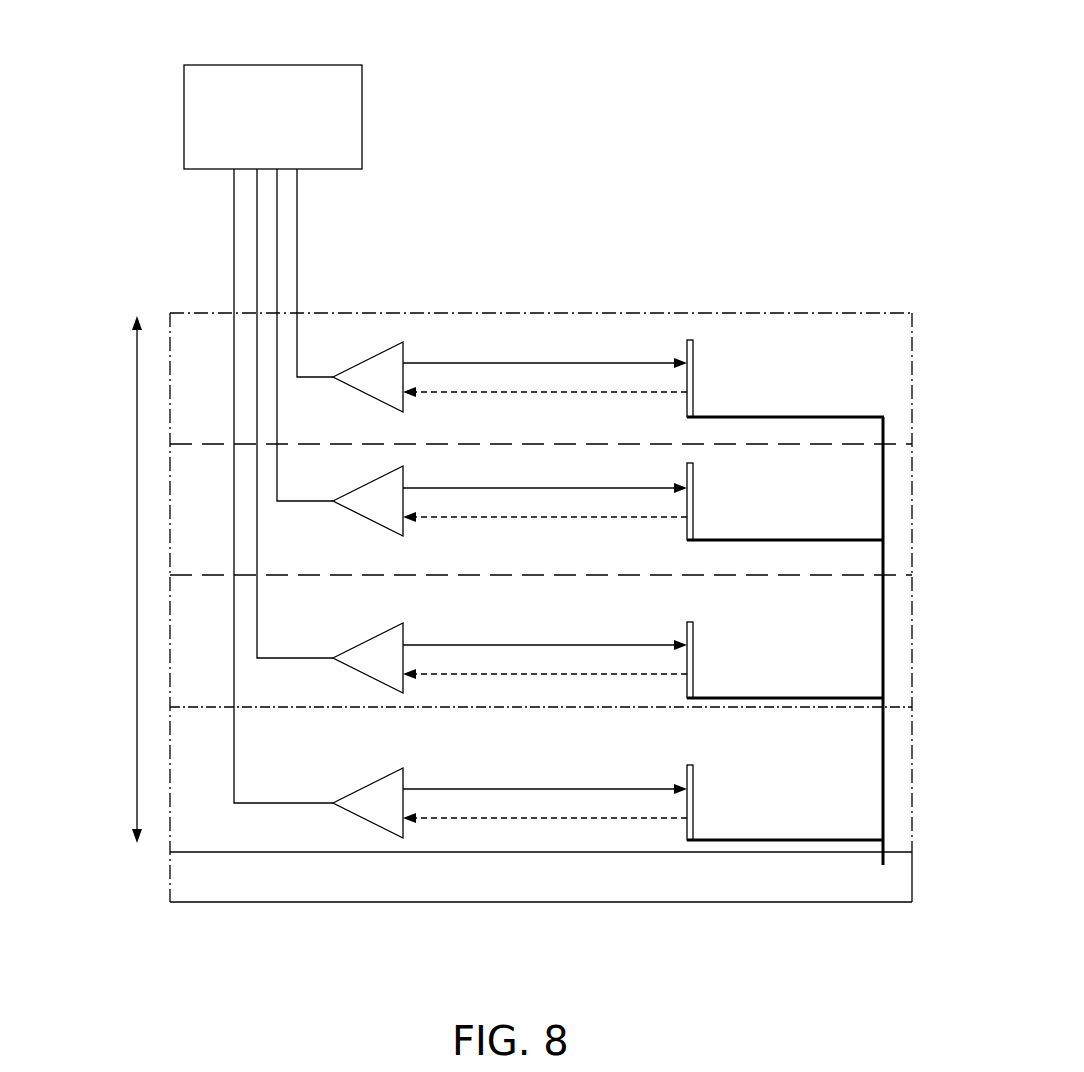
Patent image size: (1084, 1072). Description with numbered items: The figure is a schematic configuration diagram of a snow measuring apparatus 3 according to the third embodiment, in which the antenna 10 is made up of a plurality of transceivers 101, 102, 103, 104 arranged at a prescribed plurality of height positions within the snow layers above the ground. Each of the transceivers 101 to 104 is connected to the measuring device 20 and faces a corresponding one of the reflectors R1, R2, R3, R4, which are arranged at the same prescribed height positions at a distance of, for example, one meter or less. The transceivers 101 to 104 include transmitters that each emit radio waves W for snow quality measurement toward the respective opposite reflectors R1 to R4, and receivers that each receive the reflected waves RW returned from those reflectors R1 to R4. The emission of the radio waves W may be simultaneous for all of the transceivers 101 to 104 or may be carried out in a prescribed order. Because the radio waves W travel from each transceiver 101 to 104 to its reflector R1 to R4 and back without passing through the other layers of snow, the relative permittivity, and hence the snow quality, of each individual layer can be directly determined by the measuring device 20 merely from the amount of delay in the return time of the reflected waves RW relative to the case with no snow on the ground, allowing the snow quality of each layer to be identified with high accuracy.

The snow measuring apparatus 3 is at (777, 188).
The measuring device 20 is at (325, 65).
The antenna 10 is at (394, 328).
The transceiver 101 is at (352, 797).
The transceiver 102 is at (352, 652).
The transceiver 103 is at (352, 497).
The transceiver 104 is at (352, 370).
The reflector R1 is at (695, 772).
The reflector R2 is at (695, 629).
The reflector R3 is at (695, 470).
The reflector R4 is at (695, 347).
The radio waves W is at (473, 362).
The reflected waves RW is at (477, 395).